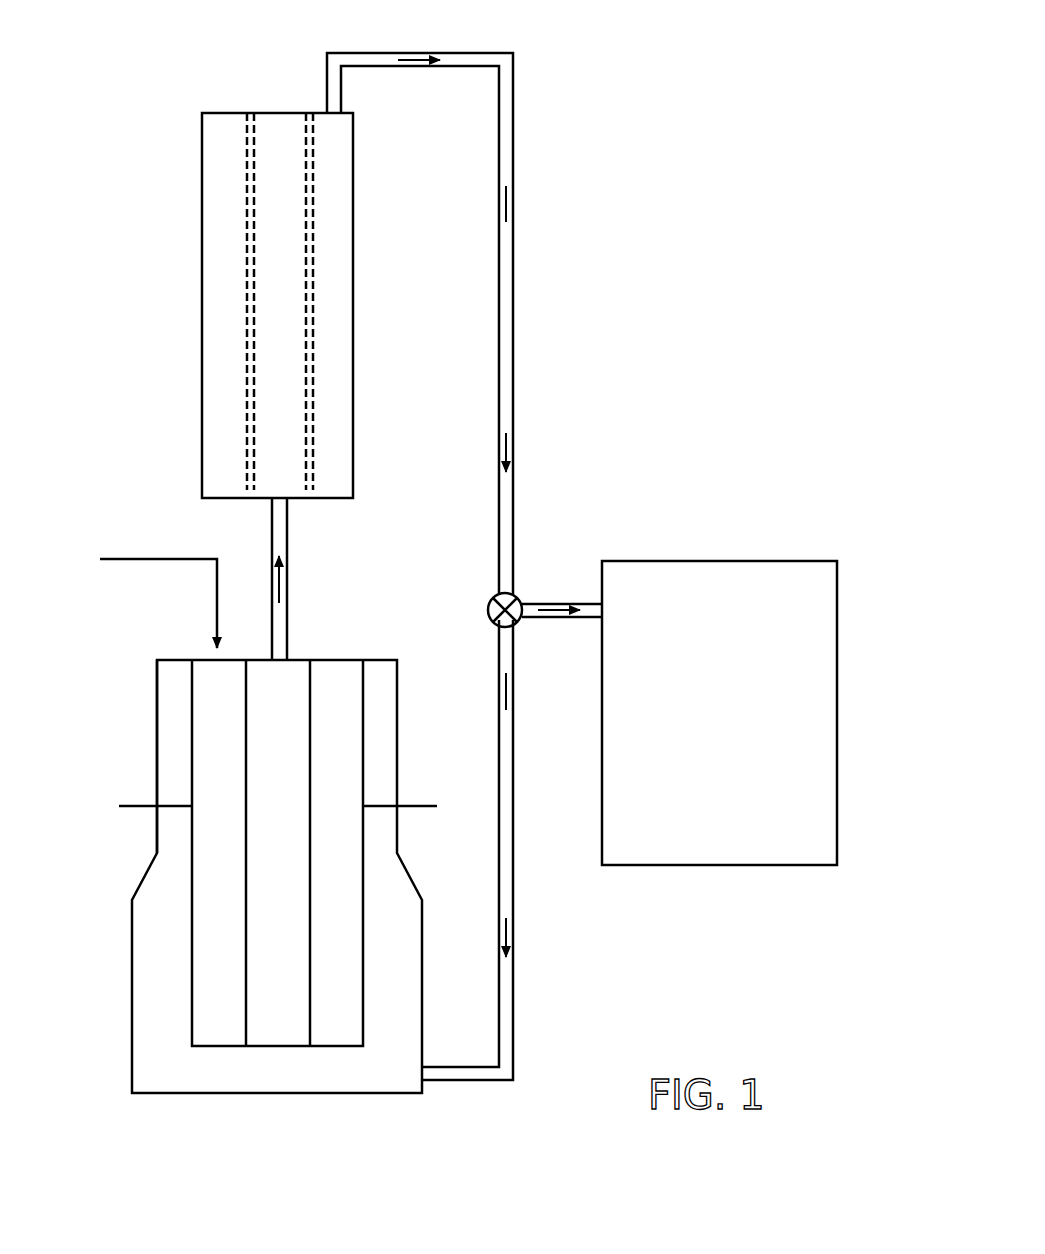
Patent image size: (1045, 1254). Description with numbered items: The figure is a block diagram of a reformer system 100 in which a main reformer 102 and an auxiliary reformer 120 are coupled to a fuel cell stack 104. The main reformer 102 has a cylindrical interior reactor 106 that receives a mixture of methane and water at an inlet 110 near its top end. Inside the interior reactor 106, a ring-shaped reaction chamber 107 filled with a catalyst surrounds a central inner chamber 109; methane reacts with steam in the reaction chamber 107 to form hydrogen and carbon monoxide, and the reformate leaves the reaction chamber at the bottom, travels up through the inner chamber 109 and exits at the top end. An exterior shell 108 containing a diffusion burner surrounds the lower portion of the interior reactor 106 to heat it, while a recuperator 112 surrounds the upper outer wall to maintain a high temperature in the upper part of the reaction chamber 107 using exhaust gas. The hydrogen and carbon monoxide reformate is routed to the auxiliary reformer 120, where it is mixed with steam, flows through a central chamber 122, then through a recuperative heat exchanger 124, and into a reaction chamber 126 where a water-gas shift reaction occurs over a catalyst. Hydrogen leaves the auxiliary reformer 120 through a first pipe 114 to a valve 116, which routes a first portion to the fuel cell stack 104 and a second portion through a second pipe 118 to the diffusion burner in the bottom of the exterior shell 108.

The reformer system 100 is at (618, 36).
The main reformer 102 is at (262, 847).
The fuel cell stack 104 is at (702, 737).
The interior reactor 106 is at (192, 897).
The reaction chamber 107 is at (234, 870).
The exterior shell 108 is at (132, 1008).
The inner chamber 109 is at (296, 811).
The inlet 110 is at (217, 617).
The recuperator 112 is at (157, 758).
The first pipe 114 is at (446, 53).
The valve 116 is at (515, 592).
The second pipe 118 is at (513, 825).
The auxiliary reformer 120 is at (222, 95).
The central chamber 122 is at (298, 262).
The recuperative heat exchanger 124 is at (310, 113).
The reaction chamber 126 is at (240, 321).